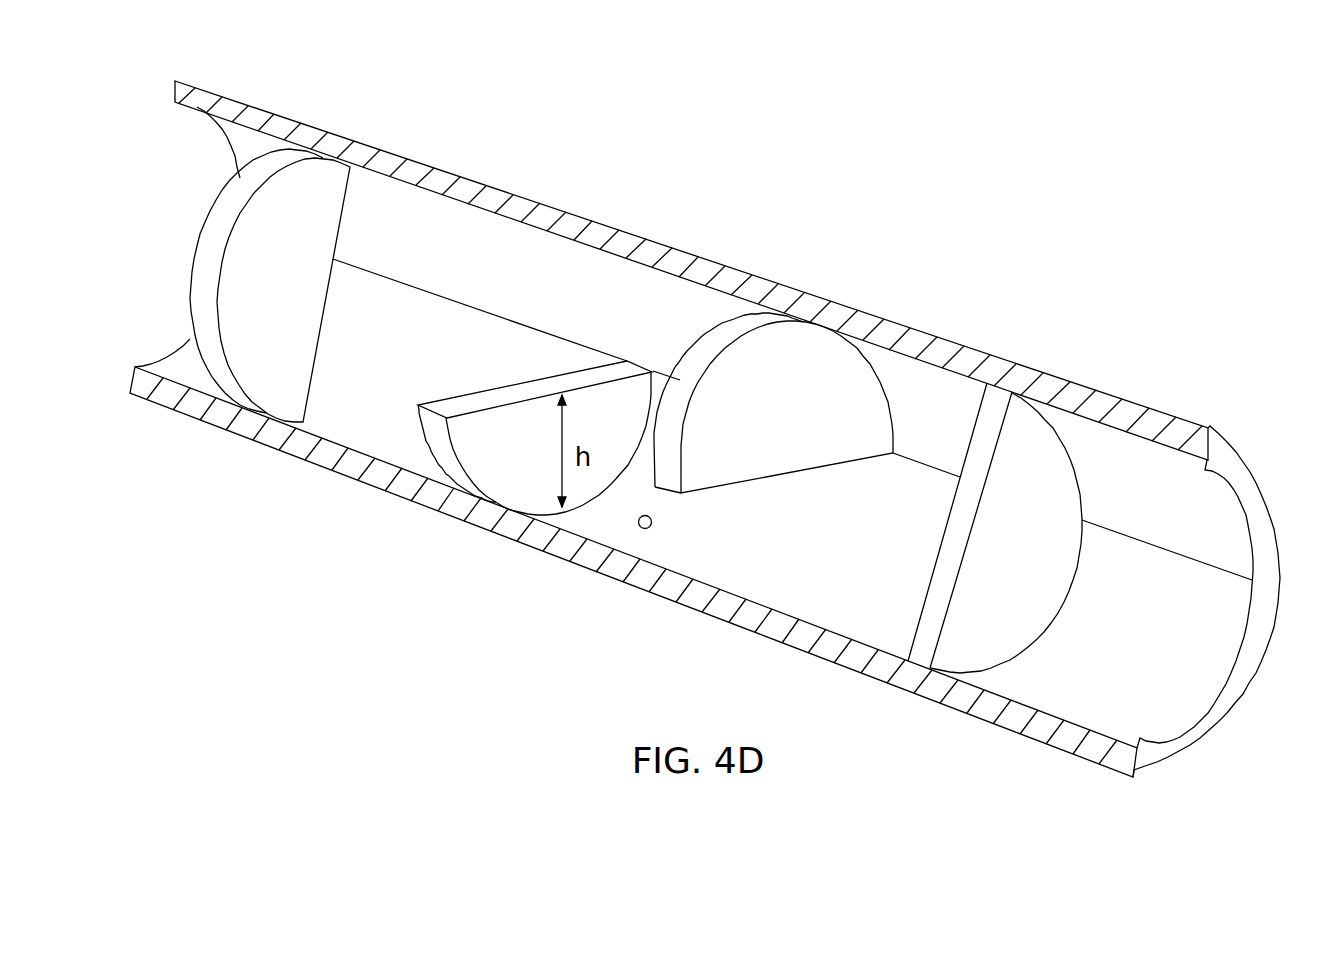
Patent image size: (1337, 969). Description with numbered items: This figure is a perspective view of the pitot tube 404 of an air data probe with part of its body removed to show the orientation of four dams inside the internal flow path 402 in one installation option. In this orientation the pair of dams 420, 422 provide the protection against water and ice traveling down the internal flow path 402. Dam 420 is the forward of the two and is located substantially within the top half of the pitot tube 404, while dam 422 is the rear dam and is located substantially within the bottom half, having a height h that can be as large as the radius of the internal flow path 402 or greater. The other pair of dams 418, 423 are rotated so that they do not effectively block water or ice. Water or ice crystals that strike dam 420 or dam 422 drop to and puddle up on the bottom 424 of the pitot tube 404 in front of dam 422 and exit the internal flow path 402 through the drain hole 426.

The internal flow path 402 is at (716, 429).
The pitot tube 404 is at (923, 340).
The dam 418 is at (1011, 416).
The dam 420 is at (775, 358).
The dam 422 is at (510, 492).
The dam 423 is at (325, 178).
The bottom 424 is at (848, 615).
The drain hole 426 is at (642, 529).